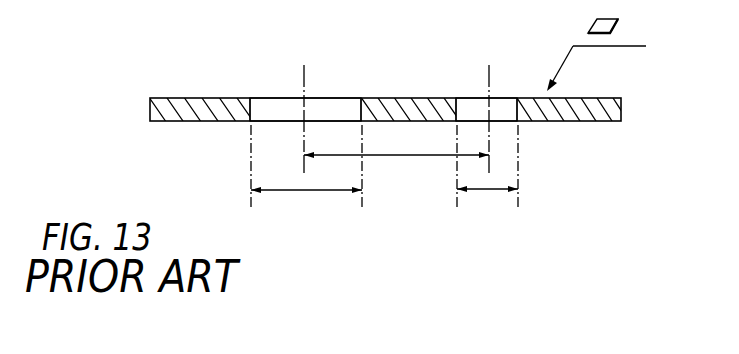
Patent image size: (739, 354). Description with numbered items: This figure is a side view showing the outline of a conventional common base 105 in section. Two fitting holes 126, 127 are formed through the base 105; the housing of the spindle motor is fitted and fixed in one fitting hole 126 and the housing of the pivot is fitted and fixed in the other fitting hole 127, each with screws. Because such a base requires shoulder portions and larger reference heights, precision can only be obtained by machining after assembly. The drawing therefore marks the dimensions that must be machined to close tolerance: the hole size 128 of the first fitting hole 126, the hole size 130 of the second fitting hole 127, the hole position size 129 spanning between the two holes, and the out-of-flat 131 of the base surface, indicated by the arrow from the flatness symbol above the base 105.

The common base 105 is at (200, 88).
The fitting hole 126 is at (333, 106).
The fitting hole 127 is at (500, 105).
The hole size 128 is at (310, 191).
The hole position size 129 is at (414, 157).
The hole size 130 is at (493, 192).
The out-of-flat 131 is at (614, 20).